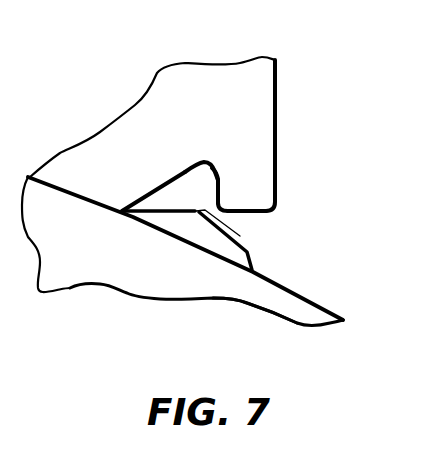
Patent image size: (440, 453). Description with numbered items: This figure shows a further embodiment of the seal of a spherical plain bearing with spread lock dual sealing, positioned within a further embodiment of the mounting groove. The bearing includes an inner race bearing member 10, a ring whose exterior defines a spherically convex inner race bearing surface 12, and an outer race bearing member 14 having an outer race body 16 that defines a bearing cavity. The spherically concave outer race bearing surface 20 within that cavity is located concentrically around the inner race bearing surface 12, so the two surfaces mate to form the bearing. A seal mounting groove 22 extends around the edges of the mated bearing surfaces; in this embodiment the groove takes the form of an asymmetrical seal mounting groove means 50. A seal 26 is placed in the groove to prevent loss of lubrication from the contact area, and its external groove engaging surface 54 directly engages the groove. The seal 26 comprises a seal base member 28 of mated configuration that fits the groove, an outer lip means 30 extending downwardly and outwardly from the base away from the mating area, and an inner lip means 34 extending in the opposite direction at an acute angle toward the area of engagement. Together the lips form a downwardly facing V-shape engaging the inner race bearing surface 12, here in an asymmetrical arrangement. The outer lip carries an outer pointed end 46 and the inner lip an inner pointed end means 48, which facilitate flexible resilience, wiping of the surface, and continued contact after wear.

The inner race bearing member 10 is at (77, 230).
The inner race bearing surface 12 is at (190, 240).
The outer race bearing member 14 is at (267, 106).
The outer race body 16 is at (278, 137).
The outer race bearing surface 20 is at (72, 193).
The seal mounting groove 22 is at (203, 162).
The seal 26 is at (203, 210).
The seal base member 28 is at (193, 183).
The outer lip means 30 is at (228, 240).
The inner lip means 34 is at (165, 200).
The outer pointed end 46 is at (250, 268).
The inner pointed end means 48 is at (133, 218).
The asymmetrical seal mounting groove means 50 is at (218, 166).
The external groove engaging surface 54 is at (203, 167).